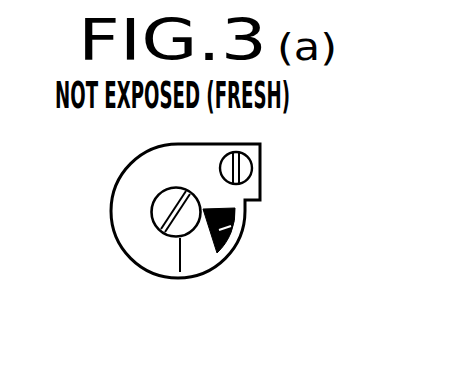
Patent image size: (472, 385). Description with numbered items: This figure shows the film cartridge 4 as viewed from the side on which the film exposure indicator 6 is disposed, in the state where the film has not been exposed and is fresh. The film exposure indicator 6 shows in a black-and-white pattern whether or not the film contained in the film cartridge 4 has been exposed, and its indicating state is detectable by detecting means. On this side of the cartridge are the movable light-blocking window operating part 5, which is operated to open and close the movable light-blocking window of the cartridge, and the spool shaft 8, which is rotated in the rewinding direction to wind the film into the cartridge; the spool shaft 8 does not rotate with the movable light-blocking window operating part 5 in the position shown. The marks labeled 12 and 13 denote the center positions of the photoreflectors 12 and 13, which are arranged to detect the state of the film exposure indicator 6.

The film cartridge 4 is at (237, 143).
The movable light-blocking window operating part 5 is at (242, 167).
The film exposure indicator 6 is at (180, 257).
The spool shaft 8 is at (167, 206).
The photoreflector 12 is at (222, 233).
The photoreflector 13 is at (193, 250).